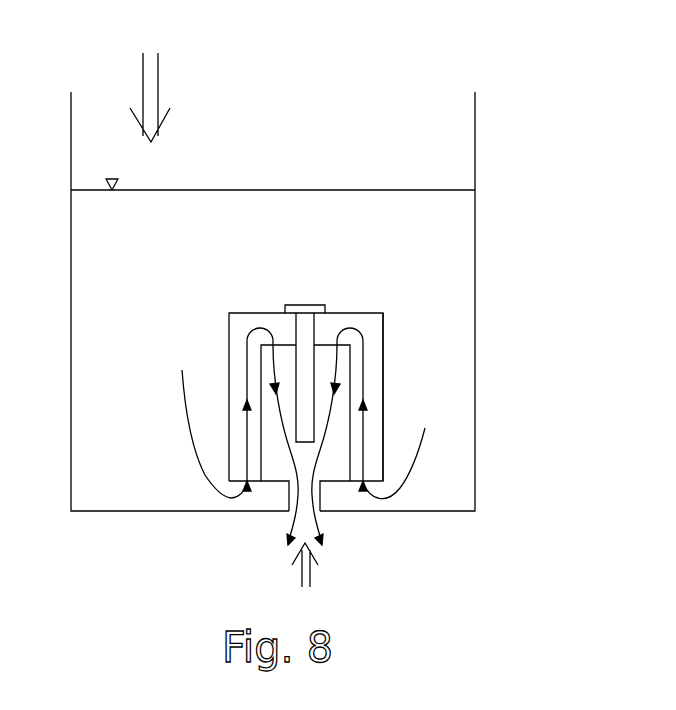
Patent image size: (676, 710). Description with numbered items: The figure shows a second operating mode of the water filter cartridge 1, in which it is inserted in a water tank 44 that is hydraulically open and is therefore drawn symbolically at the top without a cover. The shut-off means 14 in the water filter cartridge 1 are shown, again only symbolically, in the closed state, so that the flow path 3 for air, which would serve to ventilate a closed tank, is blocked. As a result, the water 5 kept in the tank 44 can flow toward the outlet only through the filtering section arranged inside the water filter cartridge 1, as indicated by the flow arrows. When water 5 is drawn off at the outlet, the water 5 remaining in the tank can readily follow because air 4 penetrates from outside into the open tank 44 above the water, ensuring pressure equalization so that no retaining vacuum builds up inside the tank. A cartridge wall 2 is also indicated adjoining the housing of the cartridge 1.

The water filter cartridge 1 is at (251, 311).
The housing wall 2 is at (370, 312).
The flow path for air 3 is at (305, 335).
The air 4 is at (150, 90).
The water 5 is at (203, 475).
The shut-off means 14 is at (300, 308).
The water tank 44 is at (478, 212).